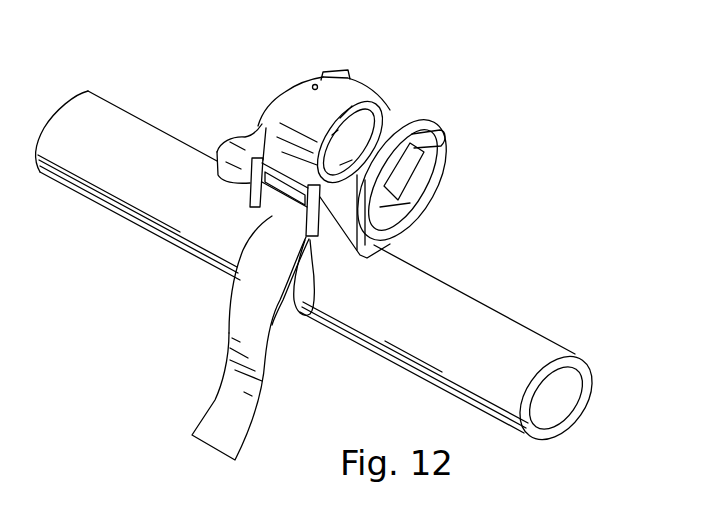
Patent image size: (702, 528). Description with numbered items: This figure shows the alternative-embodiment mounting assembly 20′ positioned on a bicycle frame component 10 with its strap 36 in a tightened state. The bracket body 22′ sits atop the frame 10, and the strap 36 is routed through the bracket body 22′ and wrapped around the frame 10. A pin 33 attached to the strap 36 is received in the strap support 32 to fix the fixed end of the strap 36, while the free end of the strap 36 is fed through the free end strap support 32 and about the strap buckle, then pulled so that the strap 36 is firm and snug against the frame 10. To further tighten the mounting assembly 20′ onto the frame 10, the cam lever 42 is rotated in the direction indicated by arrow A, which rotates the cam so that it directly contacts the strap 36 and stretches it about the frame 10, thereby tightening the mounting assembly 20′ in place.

The bicycle frame component 10 is at (545, 343).
The mounting assembly 20′ is at (292, 85).
The bracket body 22′ is at (360, 90).
The free end strap support 32 is at (217, 168).
The pin 33 is at (252, 143).
The strap 36 is at (227, 368).
The cam lever 42 is at (422, 213).
The arrow A is at (422, 146).